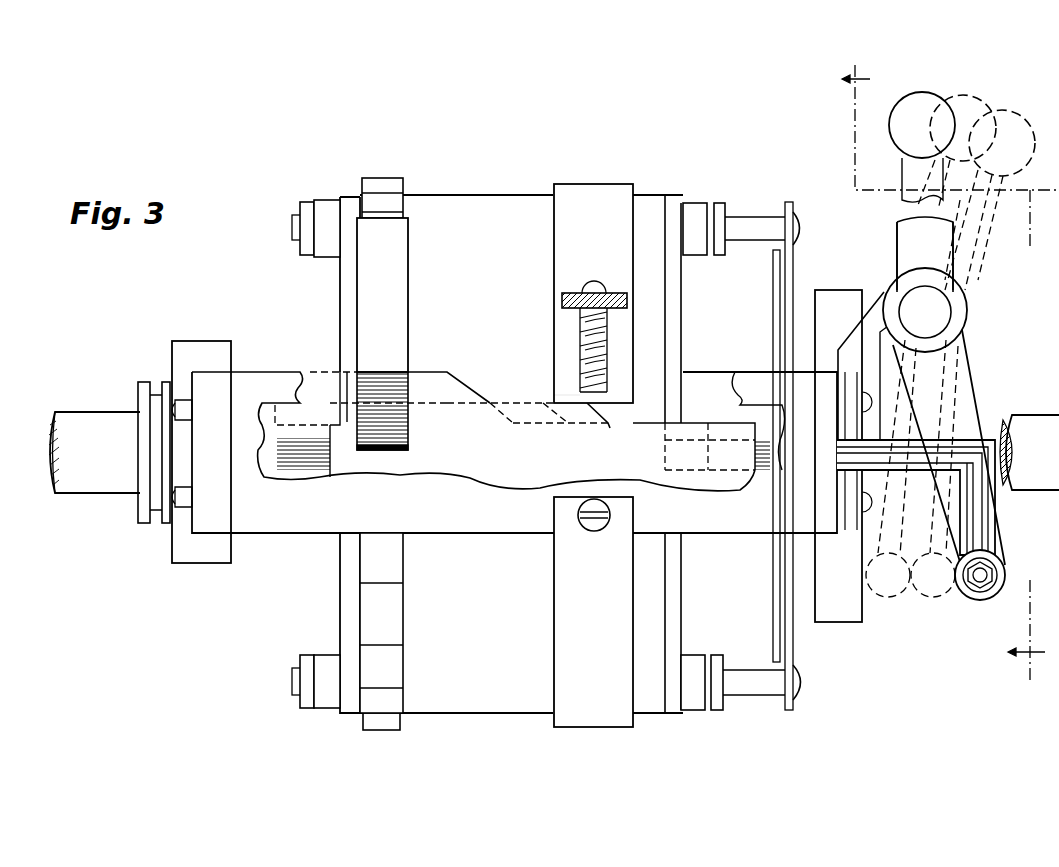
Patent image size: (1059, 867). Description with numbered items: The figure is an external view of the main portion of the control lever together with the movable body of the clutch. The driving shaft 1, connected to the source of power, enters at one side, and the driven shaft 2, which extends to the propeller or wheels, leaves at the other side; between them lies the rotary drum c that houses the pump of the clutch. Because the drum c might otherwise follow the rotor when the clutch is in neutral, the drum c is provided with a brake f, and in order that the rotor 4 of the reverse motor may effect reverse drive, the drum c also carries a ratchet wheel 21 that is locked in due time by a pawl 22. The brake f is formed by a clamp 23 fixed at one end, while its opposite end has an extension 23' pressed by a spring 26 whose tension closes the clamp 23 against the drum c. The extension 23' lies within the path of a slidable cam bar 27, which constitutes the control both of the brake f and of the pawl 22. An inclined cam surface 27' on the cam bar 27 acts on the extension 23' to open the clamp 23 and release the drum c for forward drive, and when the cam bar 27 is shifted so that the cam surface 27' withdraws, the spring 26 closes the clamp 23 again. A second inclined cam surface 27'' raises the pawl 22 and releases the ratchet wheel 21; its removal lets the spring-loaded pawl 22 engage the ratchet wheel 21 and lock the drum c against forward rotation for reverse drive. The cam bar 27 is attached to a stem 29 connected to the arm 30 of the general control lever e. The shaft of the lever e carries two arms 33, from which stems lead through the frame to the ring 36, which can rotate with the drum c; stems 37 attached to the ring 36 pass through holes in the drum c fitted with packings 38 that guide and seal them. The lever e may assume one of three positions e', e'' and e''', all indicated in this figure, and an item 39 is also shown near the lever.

The driving shaft 1 is at (100, 483).
The driven shaft 2 is at (1013, 428).
The rotor 4 is at (941, 372).
The ratchet wheel 21 is at (385, 181).
The pawl 22 is at (362, 301).
The clamp 23 is at (594, 442).
The extension 23' is at (548, 392).
The spring 26 is at (568, 362).
The cam bar 27 is at (390, 390).
The inclined cam surface 27' is at (553, 414).
The second inclined cam surface 27'' is at (410, 382).
The stem 29 is at (900, 470).
The arm 30 is at (1008, 565).
The arms 33 is at (775, 613).
The ring 36 is at (785, 710).
The stems 37 is at (748, 220).
The packings 38 is at (700, 203).
The bracket 39 is at (905, 178).
The rotary drum c is at (485, 205).
The brake f is at (582, 192).
The general control lever e is at (931, 416).
The first lever position e' is at (943, 360).
The second lever position e'' is at (953, 366).
The third lever position e''' is at (950, 340).